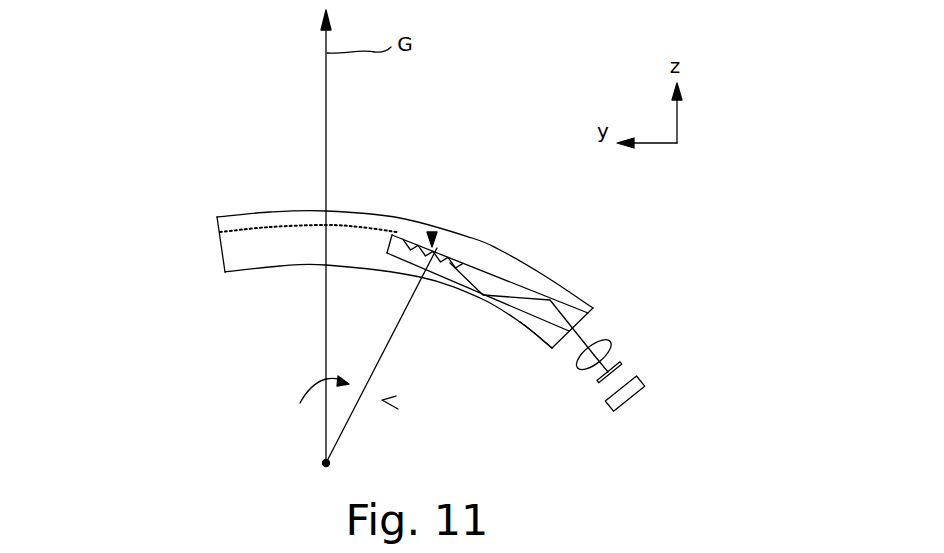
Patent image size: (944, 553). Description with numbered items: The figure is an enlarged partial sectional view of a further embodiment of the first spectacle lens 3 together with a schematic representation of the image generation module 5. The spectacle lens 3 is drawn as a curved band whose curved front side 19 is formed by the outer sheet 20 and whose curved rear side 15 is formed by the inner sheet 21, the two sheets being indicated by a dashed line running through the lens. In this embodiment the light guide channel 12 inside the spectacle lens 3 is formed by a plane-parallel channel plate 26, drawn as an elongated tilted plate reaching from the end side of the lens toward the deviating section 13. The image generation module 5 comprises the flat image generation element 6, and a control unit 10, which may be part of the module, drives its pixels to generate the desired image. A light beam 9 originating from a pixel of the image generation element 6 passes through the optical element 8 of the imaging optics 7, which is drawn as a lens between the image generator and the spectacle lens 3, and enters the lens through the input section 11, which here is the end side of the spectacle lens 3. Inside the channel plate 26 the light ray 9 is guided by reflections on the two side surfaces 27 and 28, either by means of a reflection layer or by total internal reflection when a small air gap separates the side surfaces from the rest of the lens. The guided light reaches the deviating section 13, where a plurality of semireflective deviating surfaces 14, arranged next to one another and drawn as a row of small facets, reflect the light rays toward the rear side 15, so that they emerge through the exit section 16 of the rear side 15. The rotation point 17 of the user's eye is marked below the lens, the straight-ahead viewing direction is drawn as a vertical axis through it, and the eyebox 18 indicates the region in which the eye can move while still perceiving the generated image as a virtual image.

The first spectacle lens 3 is at (358, 273).
The front side 19 is at (242, 212).
The outer sheet 20 is at (401, 222).
The rear side 15 is at (251, 273).
The inner sheet 21 is at (388, 303).
The light guide channel 12 is at (487, 293).
The semireflective deviating surfaces 14 is at (405, 246).
The deviating section 13 is at (433, 231).
The channel plate 26 is at (507, 270).
The side surface 28 is at (537, 290).
The side surface 27 is at (527, 328).
The input section 11 is at (560, 349).
The exit section 16 is at (426, 274).
The rotation point 17 is at (347, 359).
The eyebox 18 is at (300, 403).
The light beam 9 is at (626, 332).
The optical element 8 is at (585, 373).
The imaging optics 7 is at (645, 360).
The image generation element 6 is at (646, 389).
The image generation module 5 is at (666, 426).
The control unit 10 is at (627, 412).